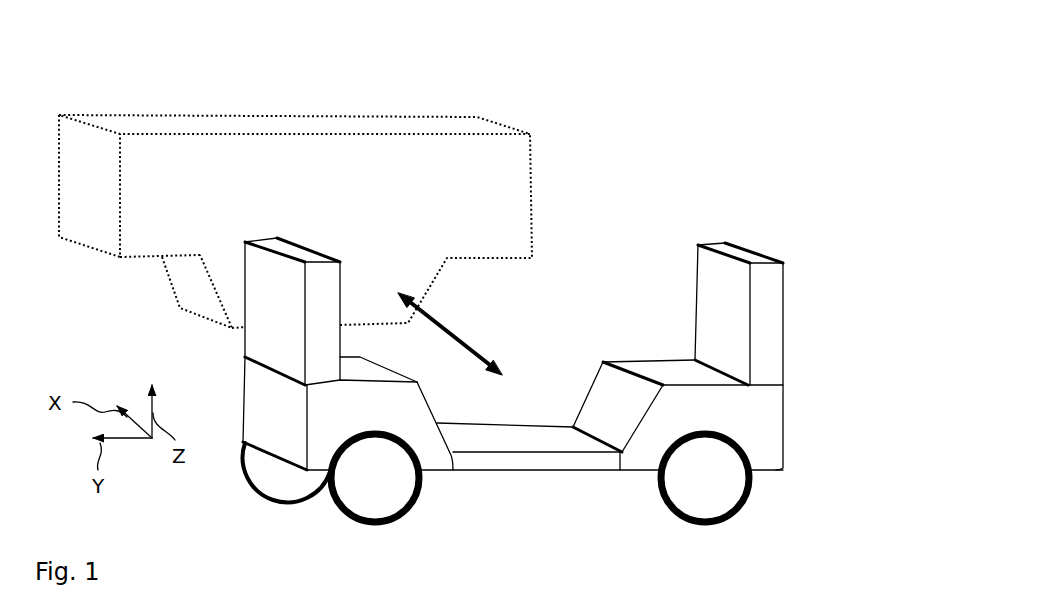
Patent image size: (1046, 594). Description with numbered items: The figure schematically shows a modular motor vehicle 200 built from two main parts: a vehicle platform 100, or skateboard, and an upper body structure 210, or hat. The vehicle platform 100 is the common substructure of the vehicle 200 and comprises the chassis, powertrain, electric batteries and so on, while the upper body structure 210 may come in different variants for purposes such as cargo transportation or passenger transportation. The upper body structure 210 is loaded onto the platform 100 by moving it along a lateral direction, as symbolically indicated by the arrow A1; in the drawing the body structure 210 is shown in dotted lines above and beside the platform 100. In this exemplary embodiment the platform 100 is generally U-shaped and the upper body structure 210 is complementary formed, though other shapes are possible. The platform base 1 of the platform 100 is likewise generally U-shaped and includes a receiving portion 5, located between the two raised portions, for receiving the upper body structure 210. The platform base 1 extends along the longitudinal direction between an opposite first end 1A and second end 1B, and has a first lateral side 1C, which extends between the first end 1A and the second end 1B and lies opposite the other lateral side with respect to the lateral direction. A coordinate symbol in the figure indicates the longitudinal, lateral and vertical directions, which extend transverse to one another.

The modular motor vehicle 200 is at (421, 272).
The upper body structure 210 is at (376, 111).
The vehicle platform 100 is at (513, 339).
The platform base 1 is at (513, 369).
The first end 1A is at (662, 345).
The second end 1B is at (351, 335).
The first lateral side 1C is at (540, 463).
The receiving portion 5 is at (545, 369).
The arrow A1 is at (465, 342).